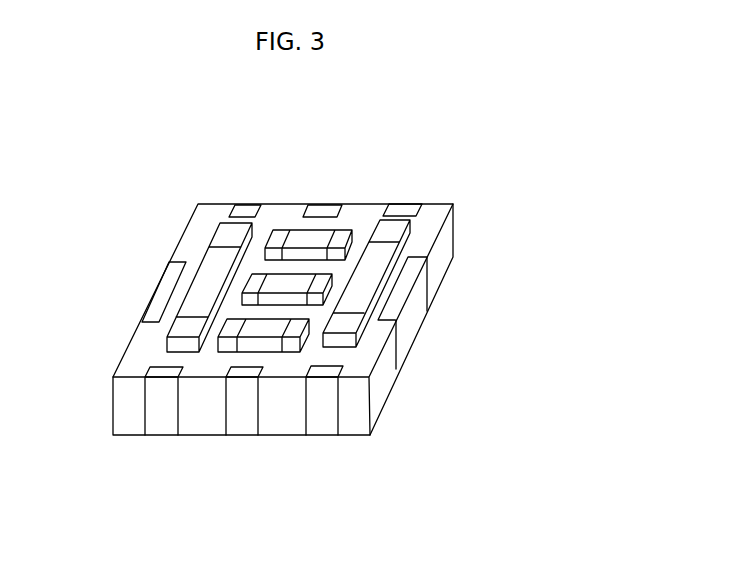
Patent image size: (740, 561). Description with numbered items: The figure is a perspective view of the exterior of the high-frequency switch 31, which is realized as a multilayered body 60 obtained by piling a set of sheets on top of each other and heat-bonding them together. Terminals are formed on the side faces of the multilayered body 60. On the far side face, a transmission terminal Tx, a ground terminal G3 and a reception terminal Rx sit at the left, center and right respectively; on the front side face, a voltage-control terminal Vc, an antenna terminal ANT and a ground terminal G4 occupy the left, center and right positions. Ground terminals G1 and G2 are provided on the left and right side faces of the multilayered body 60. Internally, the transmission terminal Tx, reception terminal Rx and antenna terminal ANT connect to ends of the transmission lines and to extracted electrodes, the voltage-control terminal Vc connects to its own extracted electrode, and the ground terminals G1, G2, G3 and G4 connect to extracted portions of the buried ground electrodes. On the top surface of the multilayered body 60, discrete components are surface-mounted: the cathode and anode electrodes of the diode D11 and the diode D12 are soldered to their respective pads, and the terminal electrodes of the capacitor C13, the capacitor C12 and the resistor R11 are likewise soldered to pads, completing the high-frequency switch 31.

The high-frequency switch 31 is at (133, 154).
The multilayered body 60 is at (433, 204).
The transmission terminal Tx is at (243, 204).
The reception terminal Rx is at (402, 204).
The antenna terminal ANT is at (242, 425).
The voltage-control terminal Vc is at (162, 427).
The ground terminal G1 is at (153, 306).
The ground terminal G2 is at (412, 328).
The ground terminal G3 is at (323, 204).
The ground terminal G4 is at (322, 425).
The diode D11 is at (208, 264).
The diode D12 is at (383, 258).
The capacitor C12 is at (318, 285).
The capacitor C13 is at (298, 232).
The resistor R11 is at (268, 330).